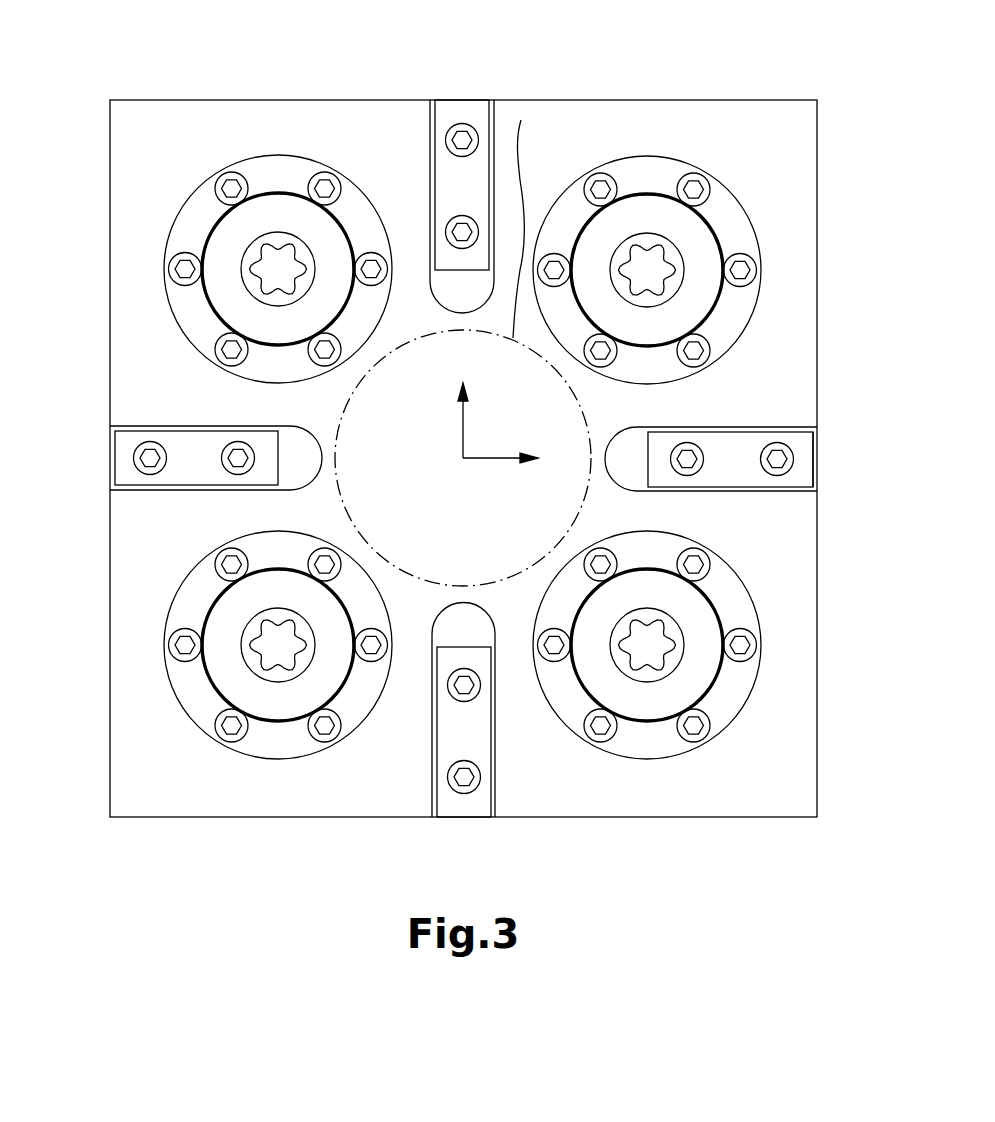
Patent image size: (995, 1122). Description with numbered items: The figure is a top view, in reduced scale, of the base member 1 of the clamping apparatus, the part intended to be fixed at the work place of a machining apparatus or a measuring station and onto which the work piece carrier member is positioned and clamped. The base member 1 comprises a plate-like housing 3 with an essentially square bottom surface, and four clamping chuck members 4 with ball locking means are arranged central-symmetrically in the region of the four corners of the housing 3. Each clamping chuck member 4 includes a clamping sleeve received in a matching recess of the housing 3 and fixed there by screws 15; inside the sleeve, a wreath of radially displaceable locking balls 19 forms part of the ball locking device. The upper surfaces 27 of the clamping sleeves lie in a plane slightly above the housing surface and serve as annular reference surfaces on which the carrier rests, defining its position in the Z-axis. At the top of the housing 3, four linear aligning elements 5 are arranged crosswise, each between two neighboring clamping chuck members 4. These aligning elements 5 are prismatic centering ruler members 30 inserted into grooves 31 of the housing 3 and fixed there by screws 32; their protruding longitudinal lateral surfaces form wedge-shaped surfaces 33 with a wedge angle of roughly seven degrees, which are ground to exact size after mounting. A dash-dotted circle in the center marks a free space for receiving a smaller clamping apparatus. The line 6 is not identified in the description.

The base member 1 is at (86, 82).
The housing 3 is at (172, 125).
The clamping chuck member 4 is at (469, 516).
The linear aligning element 5 is at (470, 457).
The parting line 6 is at (521, 120).
The screws 15 is at (691, 732).
The locking balls 19 is at (279, 660).
The upper surfaces of clamping sleeves 27 is at (464, 467).
The centering ruler member 30 is at (770, 478).
The groove 31 is at (638, 460).
The screws 32 is at (777, 465).
The wedge-shaped surfaces 33 is at (800, 428).